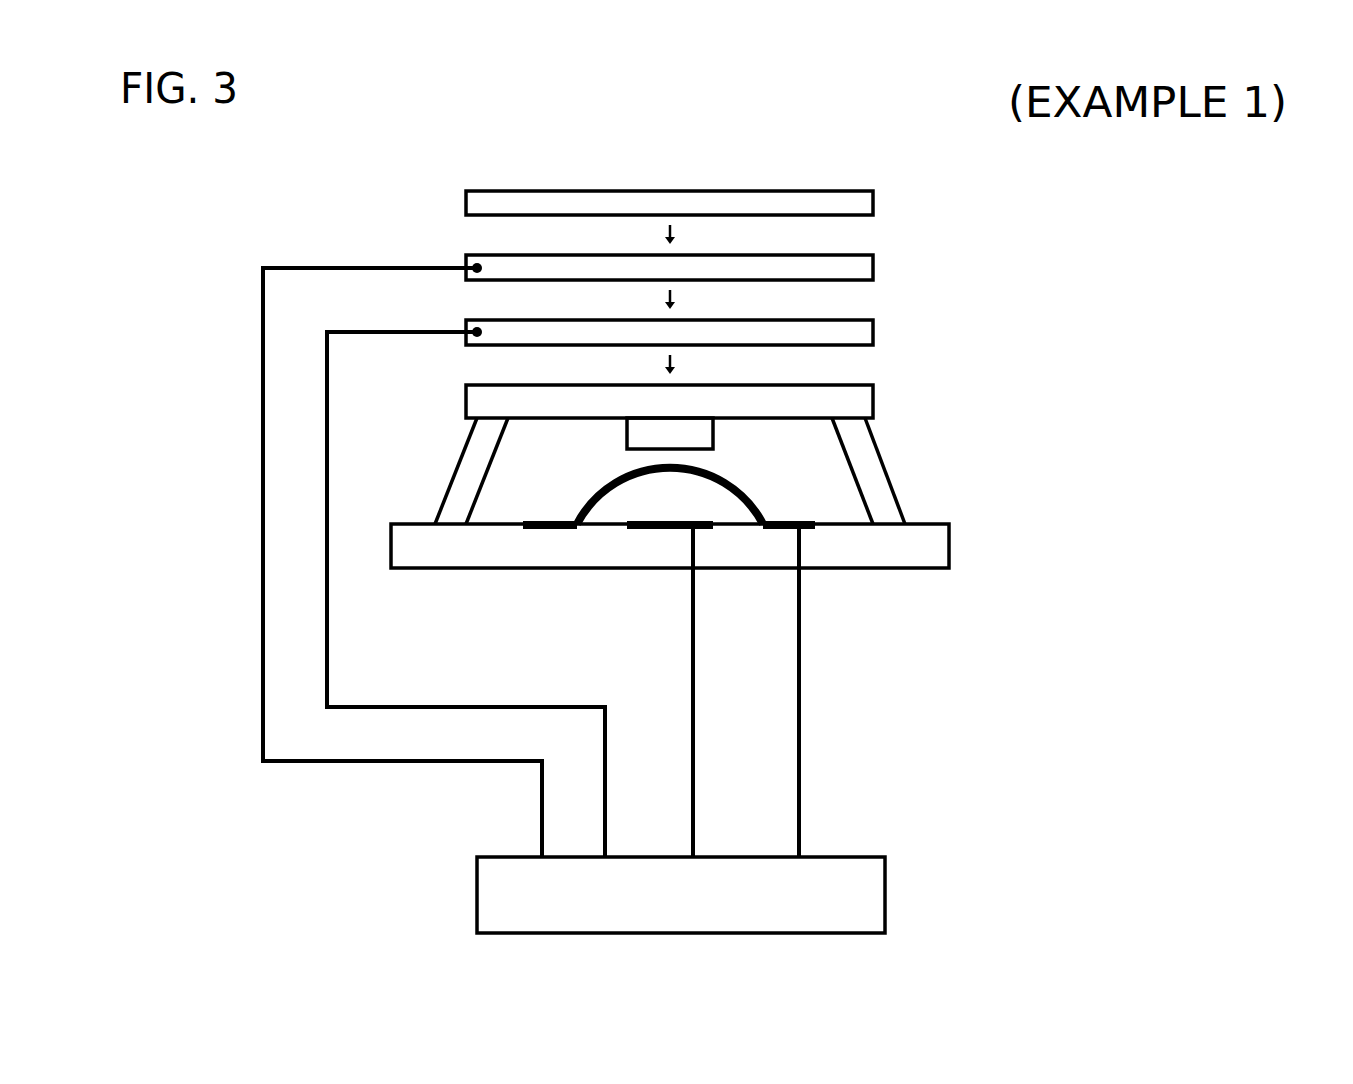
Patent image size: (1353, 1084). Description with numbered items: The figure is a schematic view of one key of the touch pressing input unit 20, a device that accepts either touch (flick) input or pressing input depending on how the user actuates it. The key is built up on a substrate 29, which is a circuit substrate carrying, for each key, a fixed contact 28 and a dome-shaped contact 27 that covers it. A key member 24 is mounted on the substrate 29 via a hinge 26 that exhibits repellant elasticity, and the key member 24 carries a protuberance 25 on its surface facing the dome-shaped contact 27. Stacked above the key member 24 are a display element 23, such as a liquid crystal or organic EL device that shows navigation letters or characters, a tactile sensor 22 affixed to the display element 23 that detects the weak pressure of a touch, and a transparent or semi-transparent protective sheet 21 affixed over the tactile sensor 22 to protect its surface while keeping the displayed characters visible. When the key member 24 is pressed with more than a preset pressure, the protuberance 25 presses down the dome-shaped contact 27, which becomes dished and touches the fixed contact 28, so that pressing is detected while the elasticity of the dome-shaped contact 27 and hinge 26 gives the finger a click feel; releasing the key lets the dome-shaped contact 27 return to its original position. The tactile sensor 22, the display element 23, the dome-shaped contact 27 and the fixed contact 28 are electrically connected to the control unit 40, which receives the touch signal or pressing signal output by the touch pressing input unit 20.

The touch pressing input unit 20 is at (1068, 177).
The protective sheet 21 is at (873, 205).
The tactile sensor 22 is at (873, 270).
The display element 23 is at (873, 335).
The key member 24 is at (873, 402).
The protuberance 25 is at (705, 433).
The hinge 26 is at (890, 502).
The dome-shaped contact 27 is at (608, 482).
The fixed contact 28 is at (652, 530).
The substrate 29 is at (938, 549).
The control unit 40 is at (886, 893).